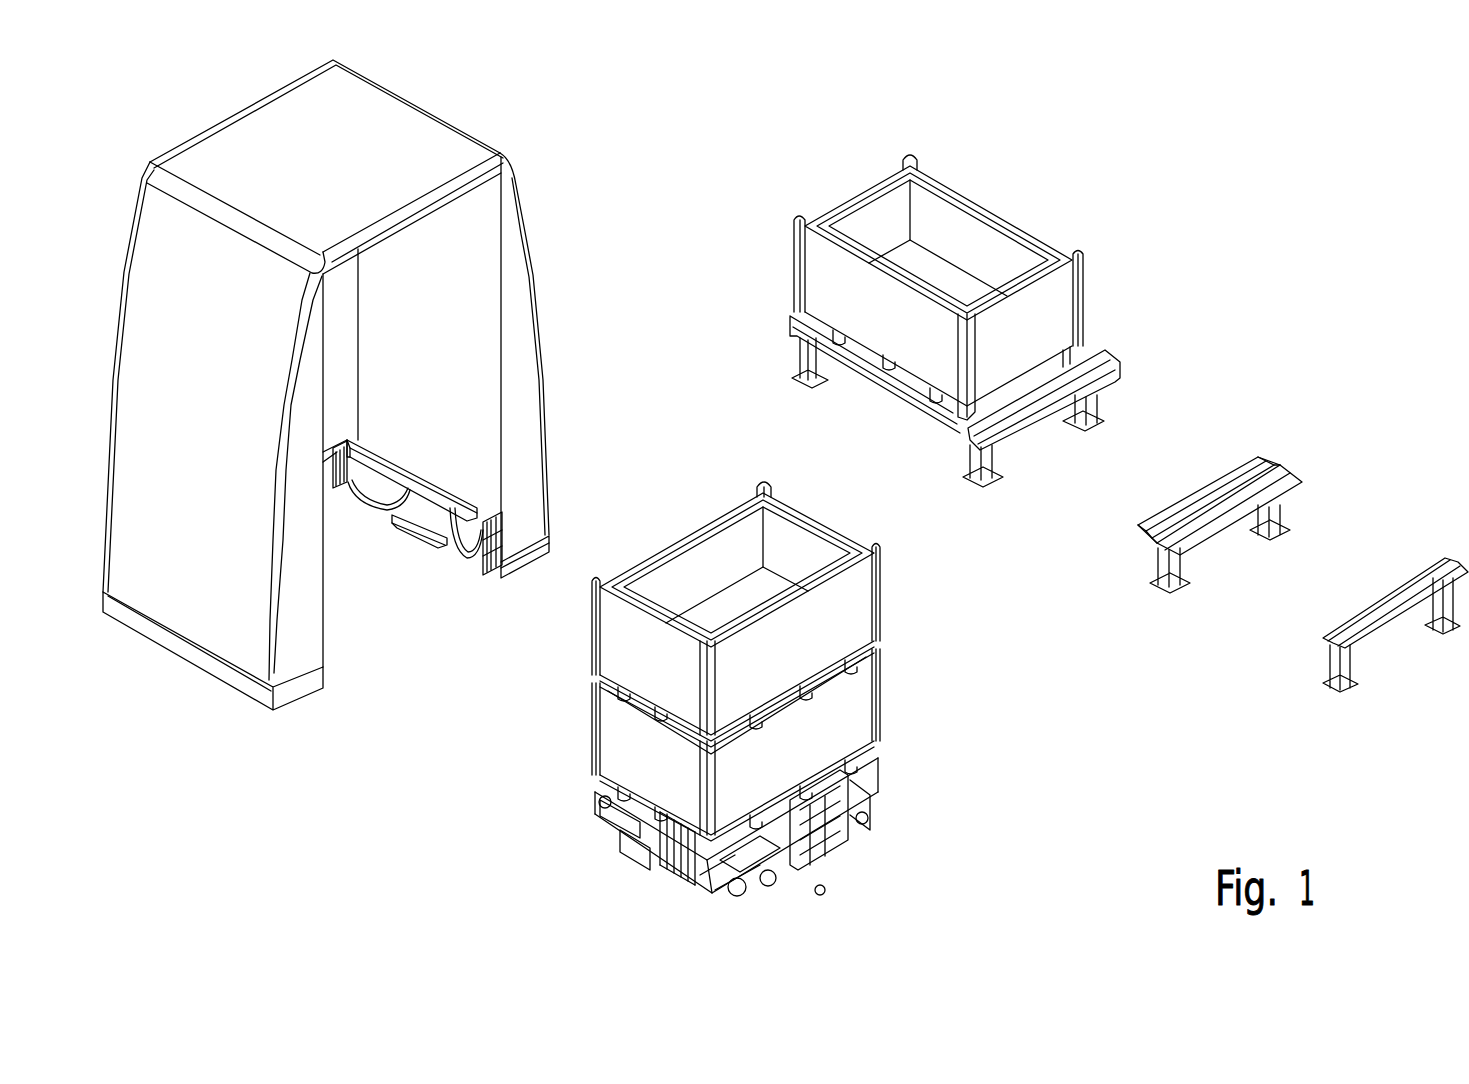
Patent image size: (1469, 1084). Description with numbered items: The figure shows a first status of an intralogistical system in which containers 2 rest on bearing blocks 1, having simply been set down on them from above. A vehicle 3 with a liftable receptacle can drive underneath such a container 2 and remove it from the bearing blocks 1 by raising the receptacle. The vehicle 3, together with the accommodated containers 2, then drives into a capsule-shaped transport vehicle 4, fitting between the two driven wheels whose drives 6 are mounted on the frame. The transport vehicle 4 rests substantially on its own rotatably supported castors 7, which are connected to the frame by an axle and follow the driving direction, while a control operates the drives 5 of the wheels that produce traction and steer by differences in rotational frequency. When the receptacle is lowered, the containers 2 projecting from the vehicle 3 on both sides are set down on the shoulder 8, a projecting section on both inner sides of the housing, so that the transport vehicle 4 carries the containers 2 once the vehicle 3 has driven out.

The bearing block 1 is at (793, 320).
The container 2 is at (1047, 312).
The vehicle 3 is at (823, 853).
The transport vehicle 4 is at (517, 337).
The drives 5 is at (421, 538).
The drive with drive wheels 6 is at (467, 561).
The castors 7 is at (342, 481).
The shoulder 8 is at (415, 477).